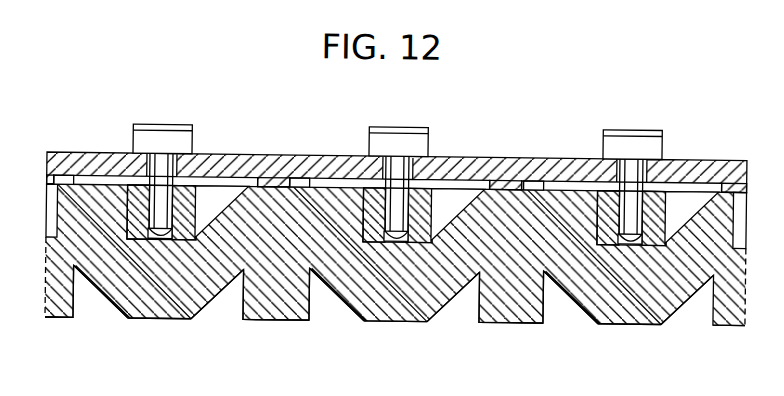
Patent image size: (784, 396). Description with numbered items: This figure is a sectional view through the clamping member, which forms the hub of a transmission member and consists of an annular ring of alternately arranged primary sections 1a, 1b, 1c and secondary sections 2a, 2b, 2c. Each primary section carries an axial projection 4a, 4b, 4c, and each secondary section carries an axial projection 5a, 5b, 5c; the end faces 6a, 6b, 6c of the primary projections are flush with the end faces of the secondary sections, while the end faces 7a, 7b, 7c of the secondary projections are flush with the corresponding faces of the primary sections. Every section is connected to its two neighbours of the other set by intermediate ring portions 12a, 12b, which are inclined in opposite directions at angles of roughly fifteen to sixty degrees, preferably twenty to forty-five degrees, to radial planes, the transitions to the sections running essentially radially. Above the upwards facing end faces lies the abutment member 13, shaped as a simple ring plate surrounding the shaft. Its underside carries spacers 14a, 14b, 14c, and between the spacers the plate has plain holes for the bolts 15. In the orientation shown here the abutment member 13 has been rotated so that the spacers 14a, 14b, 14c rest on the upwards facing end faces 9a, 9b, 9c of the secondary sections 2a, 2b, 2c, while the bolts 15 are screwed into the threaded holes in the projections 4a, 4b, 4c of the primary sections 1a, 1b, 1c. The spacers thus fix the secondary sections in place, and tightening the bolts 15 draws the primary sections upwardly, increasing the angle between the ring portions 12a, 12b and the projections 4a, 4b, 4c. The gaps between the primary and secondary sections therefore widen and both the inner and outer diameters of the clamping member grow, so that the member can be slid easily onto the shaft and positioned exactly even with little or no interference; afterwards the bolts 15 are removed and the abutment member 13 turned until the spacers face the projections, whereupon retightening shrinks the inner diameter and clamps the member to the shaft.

The primary section 1a is at (155, 306).
The primary section 1b is at (393, 303).
The primary section 1c is at (617, 313).
The secondary section 2a is at (82, 183).
The secondary section 2b is at (308, 207).
The secondary section 2c is at (475, 203).
The axial projection 4a is at (187, 195).
The axial projection 4b is at (420, 197).
The axial projection 4c is at (657, 190).
The axial projection 5a is at (67, 318).
The axial projection 5b is at (273, 305).
The axial projection 5c is at (505, 315).
The end face 6a is at (135, 187).
The end face 6b is at (372, 180).
The end face 6c is at (598, 184).
The end face 7a is at (62, 307).
The end face 7b is at (293, 315).
The end face 7c is at (503, 308).
The end face 9a is at (63, 180).
The end face 9b is at (300, 180).
The end face 9c is at (530, 177).
The intermediate ring portion 12a is at (107, 252).
The intermediate ring portion 12b is at (220, 250).
The abutment member 13 is at (233, 158).
The spacer 14a is at (50, 178).
The spacer 14b is at (262, 178).
The spacer 14c is at (503, 178).
The bolt 15 is at (157, 139).